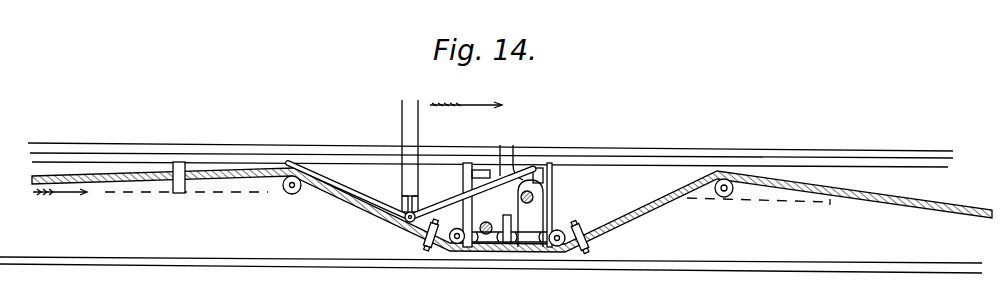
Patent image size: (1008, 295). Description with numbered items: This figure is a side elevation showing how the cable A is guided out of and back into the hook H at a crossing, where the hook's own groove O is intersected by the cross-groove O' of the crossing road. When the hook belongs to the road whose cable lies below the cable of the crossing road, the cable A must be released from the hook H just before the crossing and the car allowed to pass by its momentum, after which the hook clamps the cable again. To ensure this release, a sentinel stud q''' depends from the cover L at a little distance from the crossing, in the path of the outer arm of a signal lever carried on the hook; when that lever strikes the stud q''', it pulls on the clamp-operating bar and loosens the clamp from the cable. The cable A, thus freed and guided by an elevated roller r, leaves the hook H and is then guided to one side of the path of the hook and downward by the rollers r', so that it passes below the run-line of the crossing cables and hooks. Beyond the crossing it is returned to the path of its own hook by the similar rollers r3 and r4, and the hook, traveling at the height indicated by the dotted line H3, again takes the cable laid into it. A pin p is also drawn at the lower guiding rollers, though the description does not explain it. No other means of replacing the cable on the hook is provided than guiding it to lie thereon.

The cover L is at (490, 160).
The groove O is at (491, 247).
The cable A is at (512, 210).
The sentinel stud q''' is at (170, 186).
The elevated roller r is at (292, 192).
The cross-groove O' is at (511, 157).
The hook H is at (423, 198).
The pin p is at (438, 226).
The roller r' is at (453, 245).
The roller r3 is at (557, 222).
The roller r4 is at (731, 188).
The dotted line indicating height of hook travel H3 is at (758, 201).